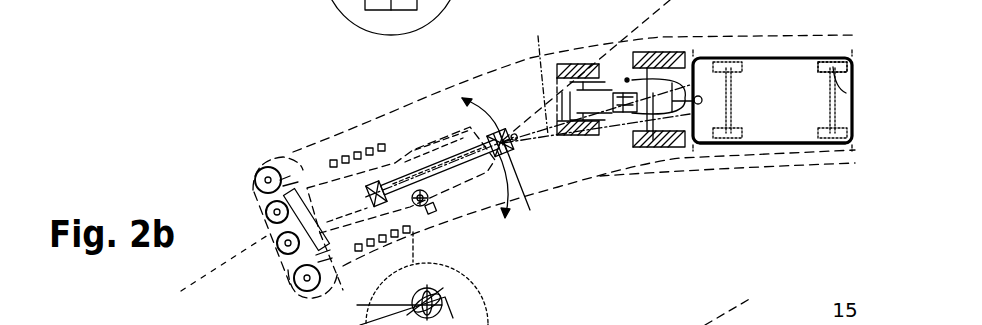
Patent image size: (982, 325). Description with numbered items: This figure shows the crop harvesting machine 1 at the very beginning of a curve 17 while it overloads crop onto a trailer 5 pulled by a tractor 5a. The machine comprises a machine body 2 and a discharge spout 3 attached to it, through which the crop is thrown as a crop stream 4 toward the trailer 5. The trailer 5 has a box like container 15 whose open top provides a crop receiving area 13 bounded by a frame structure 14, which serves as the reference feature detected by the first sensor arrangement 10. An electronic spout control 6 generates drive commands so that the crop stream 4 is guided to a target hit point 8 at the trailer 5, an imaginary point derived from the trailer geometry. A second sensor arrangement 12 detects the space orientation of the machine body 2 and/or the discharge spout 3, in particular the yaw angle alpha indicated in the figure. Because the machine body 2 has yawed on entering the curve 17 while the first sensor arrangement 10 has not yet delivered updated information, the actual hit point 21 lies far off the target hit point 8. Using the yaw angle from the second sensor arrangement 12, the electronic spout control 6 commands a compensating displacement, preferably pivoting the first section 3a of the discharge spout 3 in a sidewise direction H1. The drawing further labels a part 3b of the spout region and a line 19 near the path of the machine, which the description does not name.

The crop harvesting machine 1 is at (273, 43).
The machine body 2 is at (343, 157).
The discharge spout 3 is at (432, 156).
The first section 3a is at (395, 190).
The hitch coupling 3b is at (497, 133).
The crop stream 4 is at (540, 75).
The trailer 5 is at (726, 182).
The tractor 5a is at (624, 115).
The electronic spout control 6 is at (404, 210).
The target hit point 8 is at (700, 96).
The first sensor arrangement 10 is at (461, 186).
The second sensor arrangement 12 is at (450, 235).
The crop receiving area 13 is at (775, 111).
The frame structure 14 is at (773, 143).
The box like container 15 is at (833, 58).
The curve 17 is at (230, 270).
The lane boundary line 19 is at (348, 128).
The actual hit point 21 is at (627, 80).
The sidewise direction H1 is at (531, 190).